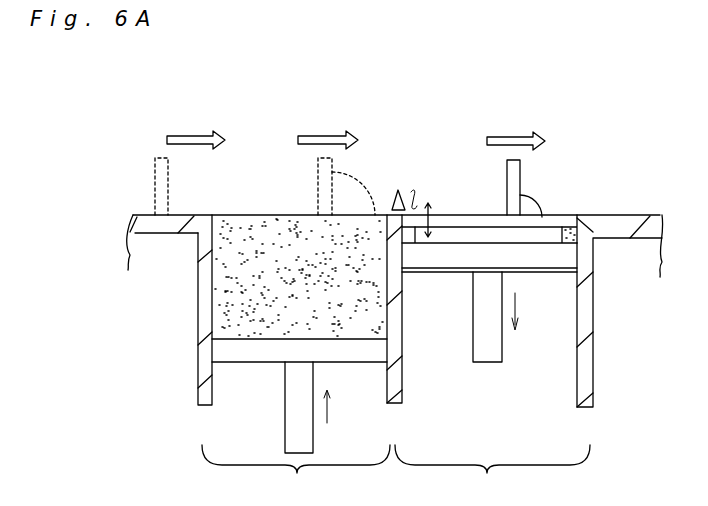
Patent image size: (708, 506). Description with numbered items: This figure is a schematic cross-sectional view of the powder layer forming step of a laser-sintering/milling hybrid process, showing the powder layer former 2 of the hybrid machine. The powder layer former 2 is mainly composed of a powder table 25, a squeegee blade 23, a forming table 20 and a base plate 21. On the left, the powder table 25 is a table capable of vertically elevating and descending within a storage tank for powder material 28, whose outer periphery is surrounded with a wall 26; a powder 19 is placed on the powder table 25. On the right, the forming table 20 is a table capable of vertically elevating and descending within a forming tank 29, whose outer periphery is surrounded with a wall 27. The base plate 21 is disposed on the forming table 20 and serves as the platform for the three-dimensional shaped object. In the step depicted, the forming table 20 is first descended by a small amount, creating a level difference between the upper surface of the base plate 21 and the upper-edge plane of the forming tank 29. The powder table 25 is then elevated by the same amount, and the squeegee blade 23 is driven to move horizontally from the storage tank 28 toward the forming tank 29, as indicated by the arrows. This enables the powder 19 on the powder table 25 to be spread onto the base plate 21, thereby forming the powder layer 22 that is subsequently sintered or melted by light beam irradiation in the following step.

The powder layer former 2 is at (341, 108).
The powder 19 is at (318, 286).
The forming table 20 is at (545, 257).
The base plate 21 is at (447, 250).
The powder layer 22 is at (458, 222).
The squeegee blade 23 is at (522, 172).
The powder table 25 is at (258, 352).
The wall 26 is at (203, 333).
The wall 27 is at (586, 357).
The storage tank for powder material 28 is at (296, 475).
The forming tank 29 is at (492, 475).